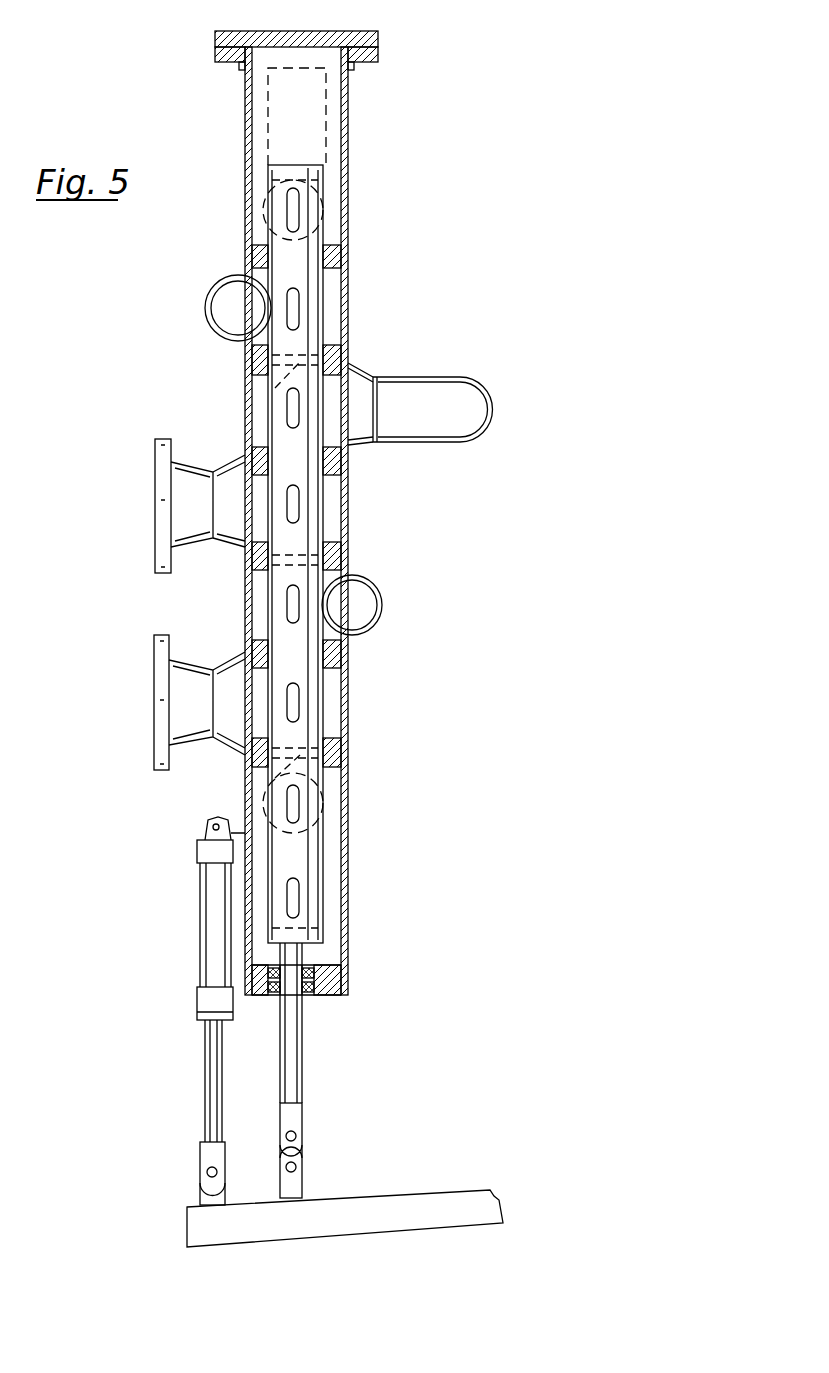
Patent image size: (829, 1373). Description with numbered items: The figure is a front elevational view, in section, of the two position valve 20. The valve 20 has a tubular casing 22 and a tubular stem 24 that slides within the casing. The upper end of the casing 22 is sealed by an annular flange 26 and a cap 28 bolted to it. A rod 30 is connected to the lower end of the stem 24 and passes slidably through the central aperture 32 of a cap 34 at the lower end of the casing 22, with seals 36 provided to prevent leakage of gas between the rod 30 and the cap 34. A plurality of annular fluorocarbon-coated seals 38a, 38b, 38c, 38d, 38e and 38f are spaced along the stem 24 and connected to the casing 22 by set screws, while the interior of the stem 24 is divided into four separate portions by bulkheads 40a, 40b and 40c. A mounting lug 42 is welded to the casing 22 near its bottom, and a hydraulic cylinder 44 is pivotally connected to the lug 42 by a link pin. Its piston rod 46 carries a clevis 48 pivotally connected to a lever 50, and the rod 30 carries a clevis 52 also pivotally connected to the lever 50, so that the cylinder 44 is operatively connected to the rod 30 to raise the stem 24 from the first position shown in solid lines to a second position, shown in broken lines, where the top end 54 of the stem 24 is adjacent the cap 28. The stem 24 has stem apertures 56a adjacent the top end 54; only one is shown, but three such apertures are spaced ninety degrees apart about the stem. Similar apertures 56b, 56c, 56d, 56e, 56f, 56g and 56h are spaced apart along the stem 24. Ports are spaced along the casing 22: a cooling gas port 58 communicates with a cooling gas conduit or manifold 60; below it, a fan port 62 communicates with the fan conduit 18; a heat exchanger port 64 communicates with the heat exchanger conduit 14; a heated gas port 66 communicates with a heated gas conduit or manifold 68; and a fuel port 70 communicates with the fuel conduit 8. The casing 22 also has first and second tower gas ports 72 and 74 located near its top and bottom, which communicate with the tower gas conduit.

The fuel conduit 8 is at (160, 719).
The heat exchanger conduit 14 is at (162, 492).
The fan conduit 18 is at (458, 392).
The two position valve 20 is at (230, 108).
The tubular casing 22 is at (348, 106).
The tubular stem 24 is at (280, 245).
The annular flange 26 is at (373, 62).
The cap 28 is at (336, 36).
The rod 30 is at (300, 1050).
The central aperture 32 is at (286, 996).
The cap 34 is at (330, 975).
The seals 36 is at (312, 978).
The annular fluorocarbon-coated seal 38a is at (336, 250).
The annular fluorocarbon-coated seal 38b is at (338, 350).
The annular fluorocarbon-coated seal 38c is at (338, 468).
The annular fluorocarbon-coated seal 38d is at (338, 555).
The annular fluorocarbon-coated seal 38e is at (340, 650).
The annular fluorocarbon-coated seal 38f is at (340, 752).
The bulkhead 40a is at (270, 382).
The bulkhead 40b is at (265, 574).
The bulkhead 40c is at (262, 776).
The mounting lug 42 is at (245, 777).
The hydraulic cylinder 44 is at (213, 943).
The piston rod 46 is at (210, 1082).
The clevis 48 is at (207, 1152).
The lever 50 is at (365, 1205).
The clevis 52 is at (302, 1118).
The top end 54 is at (297, 66).
The stem aperture 56a is at (298, 212).
The stem aperture 56b is at (298, 300).
The stem aperture 56c is at (290, 410).
The stem aperture 56d is at (298, 505).
The stem aperture 56e is at (290, 605).
The stem aperture 56f is at (298, 703).
The stem aperture 56g is at (298, 812).
The stem aperture 56h is at (298, 900).
The cooling gas port 58 is at (228, 318).
The cooling gas conduit 60 is at (222, 282).
The fan port 62 is at (352, 440).
The heat exchanger port 64 is at (244, 528).
The heated gas port 66 is at (360, 598).
The heated gas conduit 68 is at (385, 606).
The fuel port 70 is at (247, 675).
The first tower gas port 72 is at (318, 195).
The second tower gas port 74 is at (323, 795).